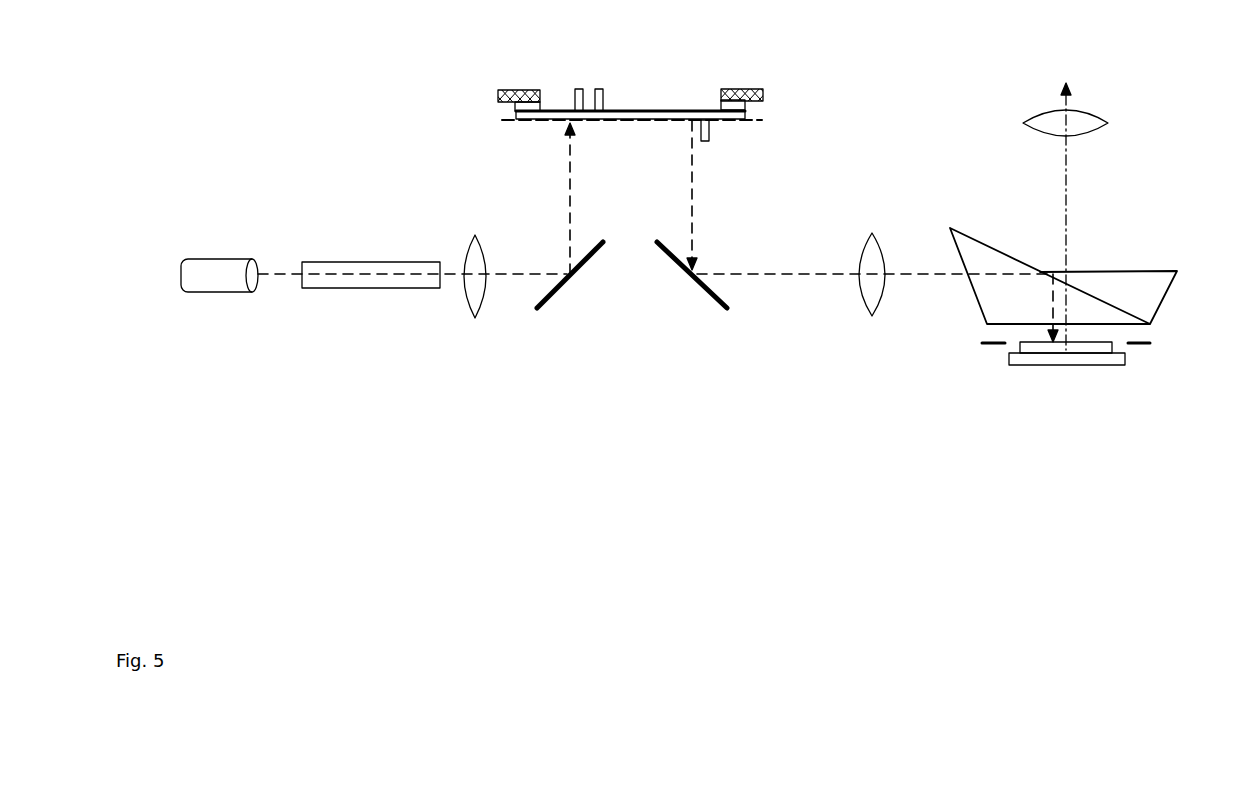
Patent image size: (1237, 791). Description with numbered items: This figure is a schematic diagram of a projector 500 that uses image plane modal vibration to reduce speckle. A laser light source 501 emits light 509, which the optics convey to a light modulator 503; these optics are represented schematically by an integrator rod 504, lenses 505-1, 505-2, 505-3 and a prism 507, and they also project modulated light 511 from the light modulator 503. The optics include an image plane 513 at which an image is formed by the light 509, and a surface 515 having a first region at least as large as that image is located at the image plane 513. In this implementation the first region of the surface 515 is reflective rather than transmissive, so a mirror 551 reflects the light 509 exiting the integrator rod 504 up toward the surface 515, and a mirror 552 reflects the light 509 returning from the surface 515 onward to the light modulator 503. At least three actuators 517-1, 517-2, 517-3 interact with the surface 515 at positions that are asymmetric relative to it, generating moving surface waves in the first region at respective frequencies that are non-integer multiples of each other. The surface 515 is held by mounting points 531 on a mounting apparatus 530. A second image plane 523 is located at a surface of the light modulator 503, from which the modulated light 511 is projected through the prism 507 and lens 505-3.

The projector 500 is at (255, 467).
The laser light source 501 is at (243, 287).
The light modulator 503 is at (1053, 366).
The integrator rod 504 is at (370, 288).
The lens 505-1 is at (467, 308).
The lens 505-2 is at (865, 307).
The lens 505-3 is at (1025, 119).
The prism 507 is at (1170, 270).
The light 509 is at (287, 277).
The modulated light 511 is at (1068, 223).
The image plane 513 is at (503, 118).
The surface 515 is at (612, 111).
The actuator 517-1 is at (577, 87).
The actuator 517-2 is at (598, 87).
The actuator 517-3 is at (710, 143).
The second image plane 523 is at (1152, 338).
The mounting apparatus 530 is at (523, 91).
The mounting points 531 is at (515, 107).
The mirror 551 is at (540, 310).
The mirror 552 is at (718, 307).